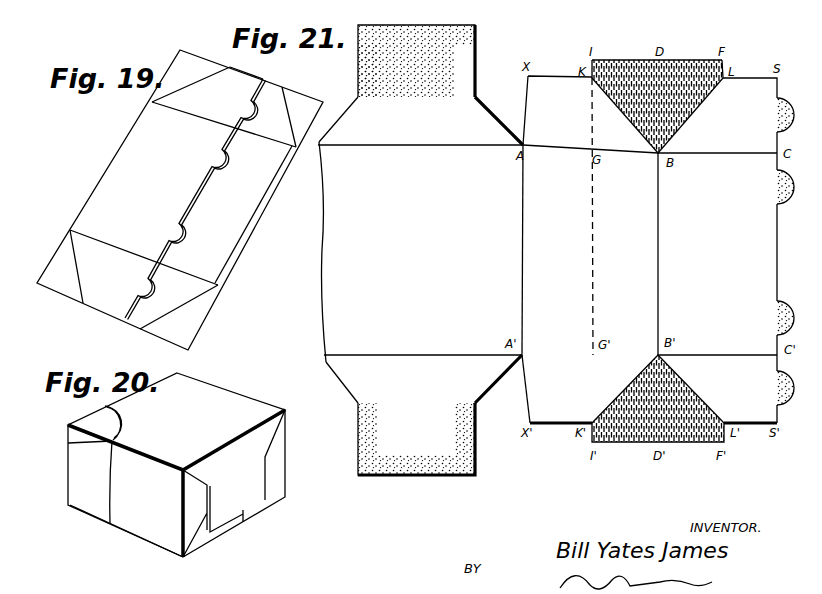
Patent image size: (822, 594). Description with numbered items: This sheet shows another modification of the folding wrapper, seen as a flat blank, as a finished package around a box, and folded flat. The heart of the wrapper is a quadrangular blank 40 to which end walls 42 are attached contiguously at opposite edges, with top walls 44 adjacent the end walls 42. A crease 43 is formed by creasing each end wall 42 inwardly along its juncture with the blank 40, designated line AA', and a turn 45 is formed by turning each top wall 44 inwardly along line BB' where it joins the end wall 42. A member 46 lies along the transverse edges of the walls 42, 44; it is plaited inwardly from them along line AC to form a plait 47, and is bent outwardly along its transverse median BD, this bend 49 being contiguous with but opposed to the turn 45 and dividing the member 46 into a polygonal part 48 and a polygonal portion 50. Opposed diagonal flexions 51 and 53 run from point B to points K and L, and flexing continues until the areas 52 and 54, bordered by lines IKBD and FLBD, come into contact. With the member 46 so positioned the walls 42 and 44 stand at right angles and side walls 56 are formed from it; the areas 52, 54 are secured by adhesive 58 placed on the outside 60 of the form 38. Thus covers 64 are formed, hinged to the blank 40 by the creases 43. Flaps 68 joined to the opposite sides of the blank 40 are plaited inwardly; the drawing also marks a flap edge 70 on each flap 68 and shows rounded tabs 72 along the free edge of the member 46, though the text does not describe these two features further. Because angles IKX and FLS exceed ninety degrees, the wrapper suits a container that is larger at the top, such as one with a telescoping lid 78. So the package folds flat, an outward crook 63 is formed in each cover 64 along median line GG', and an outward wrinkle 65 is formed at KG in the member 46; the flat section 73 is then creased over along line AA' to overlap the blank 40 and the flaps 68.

In FIG. 21, the form 38 is at (557, 405).
In FIG. 20, the quadrangular blank 40 is at (232, 406).
In FIG. 21, the quadrangular blank 40 is at (420, 250).
In FIG. 21, the end wall 42 is at (590, 207).
In FIG. 20, the crease 43 is at (150, 463).
In FIG. 21, the crease 43 is at (526, 181).
In FIG. 21, the top wall 44 is at (717, 254).
In FIG. 21, the turn 45 is at (660, 232).
In FIG. 21, the member 46 is at (657, 52).
In FIG. 21, the plait 47 is at (712, 160).
In FIG. 21, the polygonal part 48 is at (557, 110).
In FIG. 21, the bend 49 is at (680, 112).
In FIG. 21, the polygonal portion 50 is at (750, 105).
In FIG. 21, the diagonal flexion 51 is at (618, 116).
In FIG. 21, the area 52 is at (617, 137).
In FIG. 21, the diagonal flexion 53 is at (708, 106).
In FIG. 21, the area 54 is at (683, 140).
In FIG. 20, the side wall 56 is at (275, 455).
In FIG. 21, the adhesive 58 is at (617, 68).
In FIG. 21, the outside 60 is at (720, 55).
In FIG. 21, the outward crook 63 is at (600, 218).
In FIG. 19, the cover 64 is at (160, 0).
In FIG. 20, the cover 64 is at (173, 545).
In FIG. 21, the outward wrinkle 65 is at (590, 110).
In FIG. 20, the flap 68 is at (245, 483).
In FIG. 21, the flap 68 is at (416, 250).
In FIG. 21, the flap edge 70 is at (468, 63).
In FIG. 19, the locking tab 72 is at (257, 116).
In FIG. 21, the locking tab 72 is at (787, 108).
In FIG. 19, the flat section 73 is at (97, 188).
In FIG. 21, the flat section 73 is at (778, 462).
In FIG. 20, the telescoping lid 78 is at (90, 422).